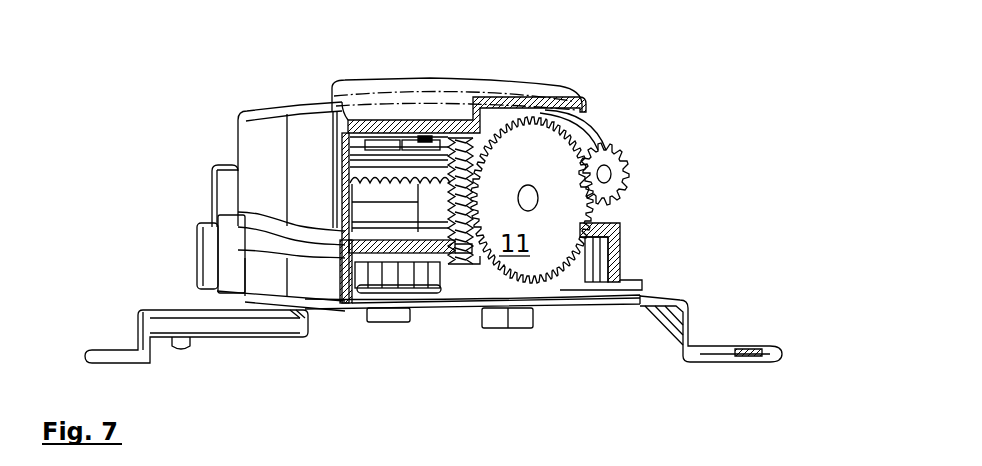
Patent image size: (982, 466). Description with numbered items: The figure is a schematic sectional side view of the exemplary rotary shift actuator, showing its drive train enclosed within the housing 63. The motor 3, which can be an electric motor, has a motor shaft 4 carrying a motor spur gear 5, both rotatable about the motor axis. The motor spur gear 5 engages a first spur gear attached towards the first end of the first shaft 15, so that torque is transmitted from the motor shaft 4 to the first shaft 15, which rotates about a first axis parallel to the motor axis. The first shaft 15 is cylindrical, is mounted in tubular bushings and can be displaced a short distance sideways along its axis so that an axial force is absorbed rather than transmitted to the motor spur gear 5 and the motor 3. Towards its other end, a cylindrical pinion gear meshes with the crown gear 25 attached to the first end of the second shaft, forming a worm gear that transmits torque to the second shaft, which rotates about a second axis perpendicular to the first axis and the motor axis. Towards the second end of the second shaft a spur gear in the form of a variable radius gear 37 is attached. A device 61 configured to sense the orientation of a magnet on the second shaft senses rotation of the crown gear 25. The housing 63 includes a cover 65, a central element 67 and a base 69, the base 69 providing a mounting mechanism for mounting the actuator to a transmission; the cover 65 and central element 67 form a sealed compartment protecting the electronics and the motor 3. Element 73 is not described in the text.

The motor 3 is at (600, 113).
The motor shaft 4 is at (612, 174).
The motor spur gear 5 is at (608, 152).
The first shaft 15 is at (530, 207).
The crown gear 25 is at (390, 178).
The variable radius gear 37 is at (397, 290).
The device configured to sense the orientation of the magnet 61 is at (424, 138).
The housing 63 is at (207, 158).
The cover 65 is at (500, 92).
The central element 67 is at (202, 248).
The base 69 is at (474, 310).
The mounting bracket 73 is at (707, 363).